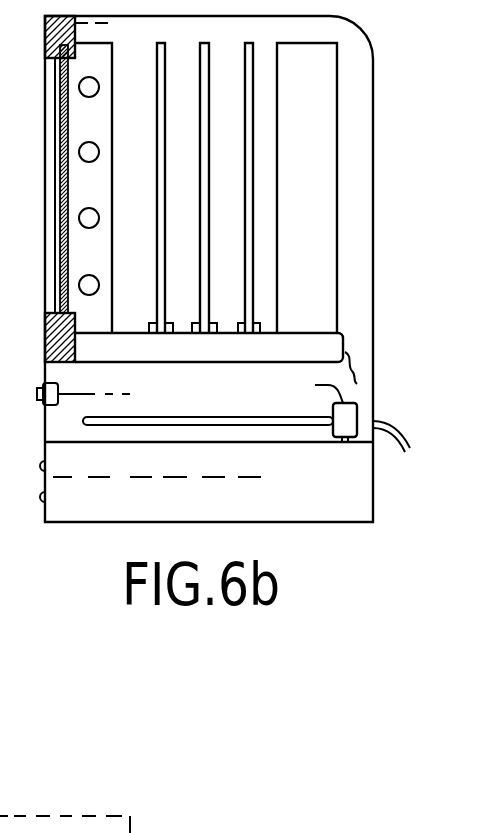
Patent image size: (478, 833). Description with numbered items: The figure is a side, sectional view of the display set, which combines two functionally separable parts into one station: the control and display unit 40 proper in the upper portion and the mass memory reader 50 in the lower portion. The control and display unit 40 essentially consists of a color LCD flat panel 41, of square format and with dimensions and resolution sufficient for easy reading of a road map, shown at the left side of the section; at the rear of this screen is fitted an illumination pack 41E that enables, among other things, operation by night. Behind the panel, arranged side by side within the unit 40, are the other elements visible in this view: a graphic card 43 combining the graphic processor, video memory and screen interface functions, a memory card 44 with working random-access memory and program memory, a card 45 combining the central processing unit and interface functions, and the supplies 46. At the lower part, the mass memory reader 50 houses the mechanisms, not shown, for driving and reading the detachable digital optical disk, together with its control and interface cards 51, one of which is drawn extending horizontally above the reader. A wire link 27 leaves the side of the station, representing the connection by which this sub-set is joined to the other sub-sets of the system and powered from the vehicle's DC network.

The control and display unit 40 is at (365, 233).
The color LCD flat panel 41 is at (60, 168).
The illumination pack 41E is at (105, 199).
The graphic card 43 is at (157, 97).
The memory card 44 is at (200, 143).
The card combining central processing unit and interface functions 45 is at (245, 243).
The supplies 46 is at (315, 282).
The mass memory reader 50 is at (320, 489).
The control and interface cards 51 is at (205, 416).
The wire links 27 is at (403, 451).